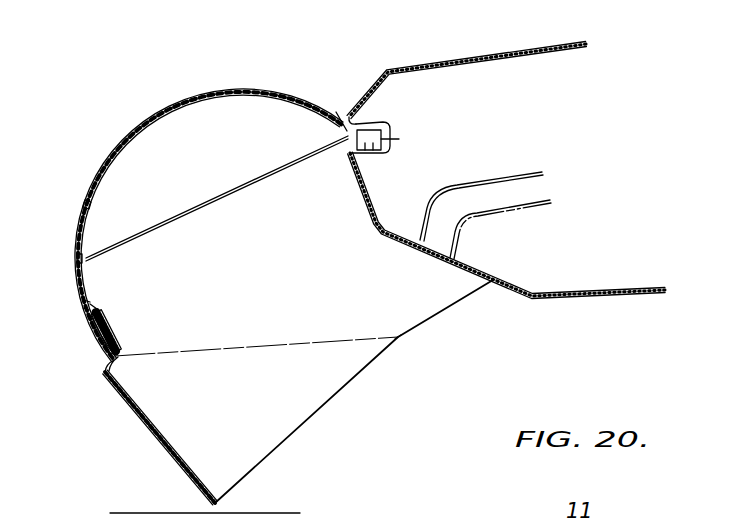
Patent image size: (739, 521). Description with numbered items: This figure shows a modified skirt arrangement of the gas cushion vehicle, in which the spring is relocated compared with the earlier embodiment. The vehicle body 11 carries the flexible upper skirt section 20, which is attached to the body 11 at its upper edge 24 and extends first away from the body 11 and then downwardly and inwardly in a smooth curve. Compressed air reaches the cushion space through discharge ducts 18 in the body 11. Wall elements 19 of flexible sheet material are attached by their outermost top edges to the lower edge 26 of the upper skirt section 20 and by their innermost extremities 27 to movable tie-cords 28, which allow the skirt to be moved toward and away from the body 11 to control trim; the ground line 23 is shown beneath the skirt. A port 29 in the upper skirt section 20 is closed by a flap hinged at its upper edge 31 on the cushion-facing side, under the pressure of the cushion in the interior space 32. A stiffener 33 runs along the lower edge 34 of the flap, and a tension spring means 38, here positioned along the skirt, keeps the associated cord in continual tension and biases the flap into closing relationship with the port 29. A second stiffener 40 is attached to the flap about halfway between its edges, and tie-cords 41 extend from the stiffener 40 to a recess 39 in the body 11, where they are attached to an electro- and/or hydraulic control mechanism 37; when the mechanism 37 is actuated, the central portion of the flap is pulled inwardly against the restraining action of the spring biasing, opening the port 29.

The body 11 is at (484, 57).
The discharge ducts 18 is at (511, 190).
The wall elements 19 is at (158, 448).
The upper skirt section 20 is at (258, 88).
The floor 23 is at (175, 512).
The upper edge 24 is at (344, 116).
The lower edge 26 is at (107, 365).
The innermost extremities 27 is at (399, 335).
The tie-cords 28 is at (443, 316).
The port 29 is at (84, 304).
The upper edge 31 is at (91, 203).
The interior space 32 is at (195, 235).
The stiffener 33 is at (97, 307).
The lower edge 34 is at (92, 322).
The control mechanism 37 is at (372, 143).
The tension spring means 38 is at (118, 338).
The recess 39 is at (388, 121).
The second stiffener 40 is at (77, 259).
The tie-cords 41 is at (258, 181).